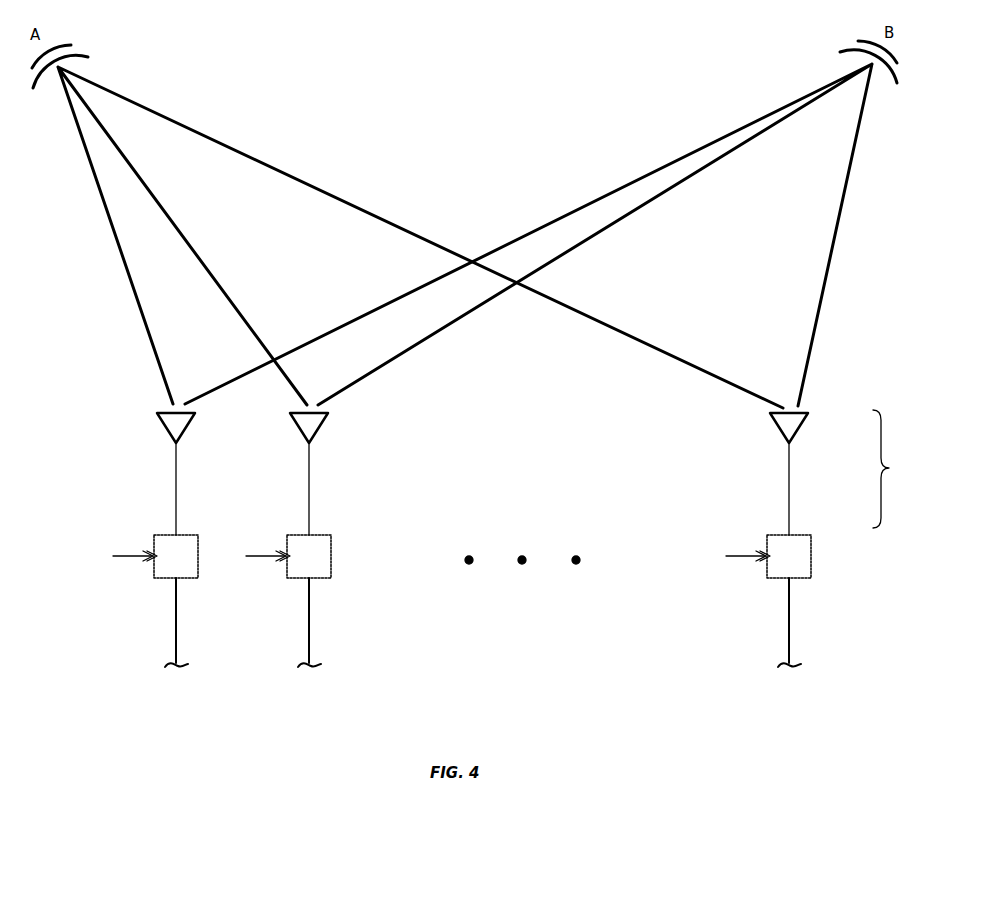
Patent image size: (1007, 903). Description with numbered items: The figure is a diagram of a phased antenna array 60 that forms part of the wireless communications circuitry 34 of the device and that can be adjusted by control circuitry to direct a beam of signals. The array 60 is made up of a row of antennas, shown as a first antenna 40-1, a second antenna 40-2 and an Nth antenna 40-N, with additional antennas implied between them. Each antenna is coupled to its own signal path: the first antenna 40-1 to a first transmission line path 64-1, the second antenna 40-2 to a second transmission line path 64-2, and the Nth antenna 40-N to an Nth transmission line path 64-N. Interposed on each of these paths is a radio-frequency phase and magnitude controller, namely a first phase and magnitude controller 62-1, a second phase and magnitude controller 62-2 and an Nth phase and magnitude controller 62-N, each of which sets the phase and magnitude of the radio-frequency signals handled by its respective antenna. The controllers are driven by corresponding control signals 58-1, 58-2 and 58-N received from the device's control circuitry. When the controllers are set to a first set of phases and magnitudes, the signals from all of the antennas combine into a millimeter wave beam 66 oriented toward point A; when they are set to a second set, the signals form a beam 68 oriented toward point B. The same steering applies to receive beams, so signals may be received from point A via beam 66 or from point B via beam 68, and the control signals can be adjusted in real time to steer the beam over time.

The wireless communications circuitry 34 is at (885, 372).
The first antenna 40-1 is at (157, 425).
The second antenna 40-2 is at (322, 425).
The Nth antenna 40-N is at (770, 425).
The first control signal 58-1 is at (130, 558).
The second control signal 58-2 is at (263, 558).
The Nth control signal 58-N is at (744, 558).
The phased antenna array 60 is at (892, 469).
The first phase and magnitude controller 62-1 is at (192, 535).
The second phase and magnitude controller 62-2 is at (327, 535).
The Nth phase and magnitude controller 62-N is at (812, 553).
The first transmission line path 64-1 is at (178, 632).
The second transmission line path 64-2 is at (311, 632).
The Nth transmission line path 64-N is at (791, 632).
The beam 66 is at (108, 215).
The beam 68 is at (636, 178).